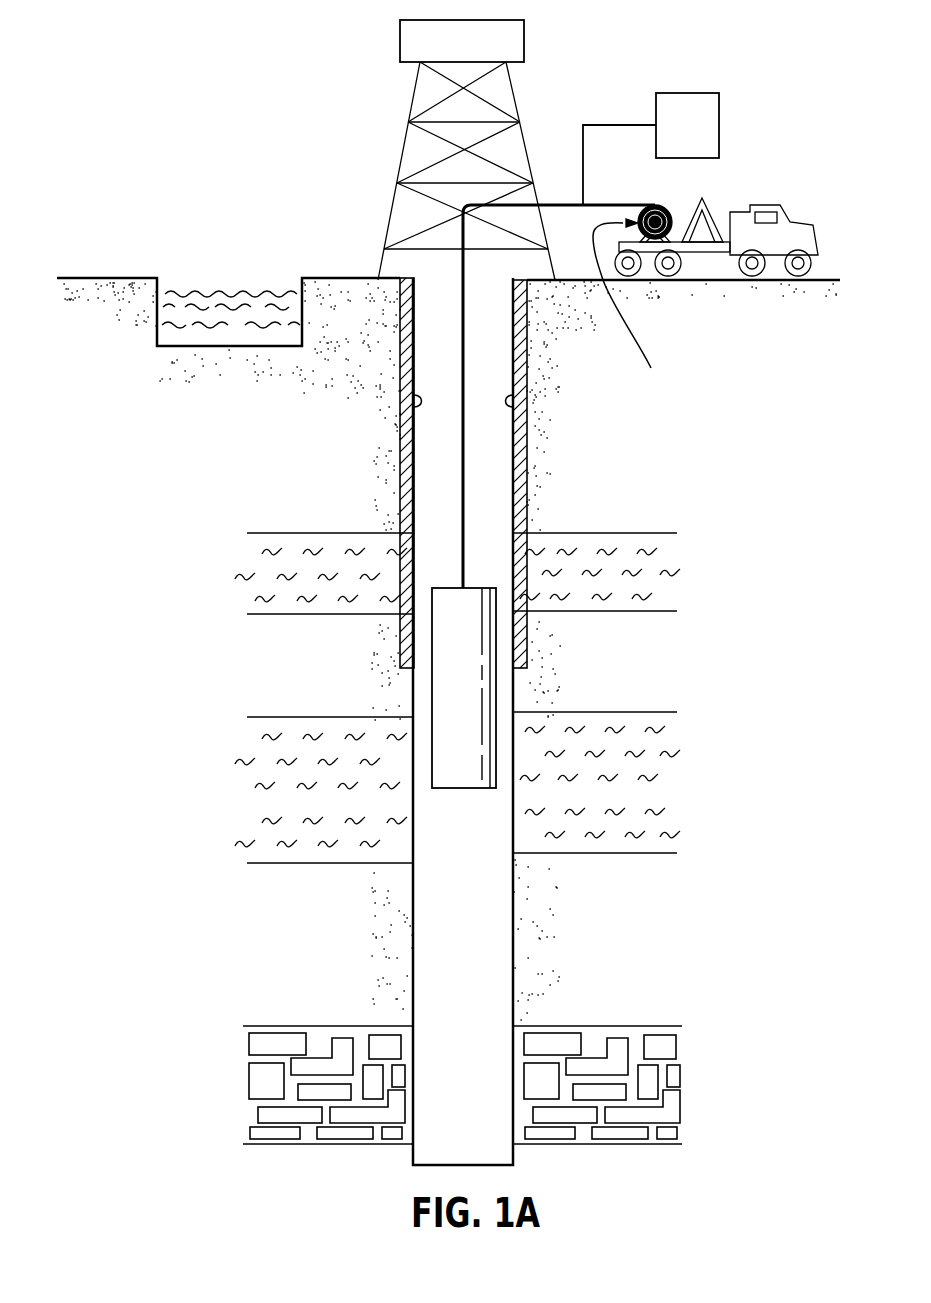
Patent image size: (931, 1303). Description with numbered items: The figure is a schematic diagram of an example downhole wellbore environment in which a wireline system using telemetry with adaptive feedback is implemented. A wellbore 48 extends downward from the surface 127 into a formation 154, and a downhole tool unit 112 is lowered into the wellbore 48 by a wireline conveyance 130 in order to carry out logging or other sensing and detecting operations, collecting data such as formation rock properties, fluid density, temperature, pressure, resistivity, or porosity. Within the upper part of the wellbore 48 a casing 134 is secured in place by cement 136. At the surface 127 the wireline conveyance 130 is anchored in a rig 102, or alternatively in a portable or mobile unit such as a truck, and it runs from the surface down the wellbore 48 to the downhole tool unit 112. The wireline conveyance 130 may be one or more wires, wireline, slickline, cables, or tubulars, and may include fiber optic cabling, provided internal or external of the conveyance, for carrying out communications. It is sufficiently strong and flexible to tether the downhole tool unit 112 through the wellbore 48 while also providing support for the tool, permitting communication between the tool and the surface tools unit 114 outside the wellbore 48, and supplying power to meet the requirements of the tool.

The wellbore 48 is at (513, 930).
The rig 102 is at (526, 79).
The downhole tool unit 112 is at (450, 672).
The surface tools unit 114 is at (719, 93).
The surface 127 is at (100, 278).
The wireline conveyance 130 is at (462, 215).
The casing 134 is at (414, 400).
The cement 136 is at (400, 440).
The formation 154 is at (283, 454).